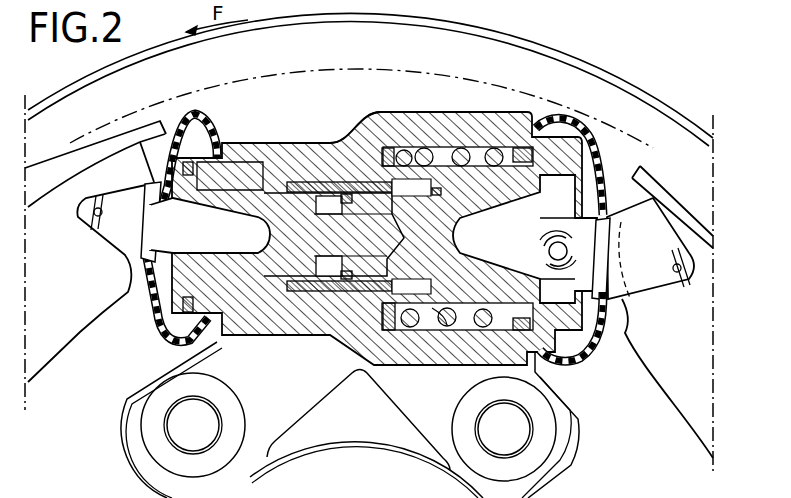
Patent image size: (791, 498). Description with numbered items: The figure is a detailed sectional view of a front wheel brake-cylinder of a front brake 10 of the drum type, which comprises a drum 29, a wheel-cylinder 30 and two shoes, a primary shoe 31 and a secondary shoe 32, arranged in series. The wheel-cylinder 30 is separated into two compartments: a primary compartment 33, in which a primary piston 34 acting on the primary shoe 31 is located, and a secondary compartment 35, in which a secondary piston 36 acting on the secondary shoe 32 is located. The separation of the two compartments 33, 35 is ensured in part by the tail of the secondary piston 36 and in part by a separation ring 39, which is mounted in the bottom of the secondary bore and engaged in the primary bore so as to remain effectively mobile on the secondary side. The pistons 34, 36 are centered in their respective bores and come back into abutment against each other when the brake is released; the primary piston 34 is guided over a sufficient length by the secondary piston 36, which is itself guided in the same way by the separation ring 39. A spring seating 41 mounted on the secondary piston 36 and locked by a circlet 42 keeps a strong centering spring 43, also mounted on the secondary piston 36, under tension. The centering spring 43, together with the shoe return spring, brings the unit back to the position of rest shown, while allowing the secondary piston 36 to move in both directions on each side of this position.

The front brake 10 is at (474, 111).
The drum 29 is at (663, 101).
The wheel-cylinder 30 is at (359, 118).
The primary shoe 31 is at (53, 164).
The secondary shoe 32 is at (672, 200).
The primary compartment 33 is at (292, 187).
The primary piston 34 is at (250, 188).
The secondary compartment 35 is at (439, 157).
The secondary piston 36 is at (581, 132).
The separation ring 39 is at (330, 181).
The spring seating 41 is at (396, 156).
The circlet 42 is at (531, 239).
The centering spring 43 is at (447, 322).